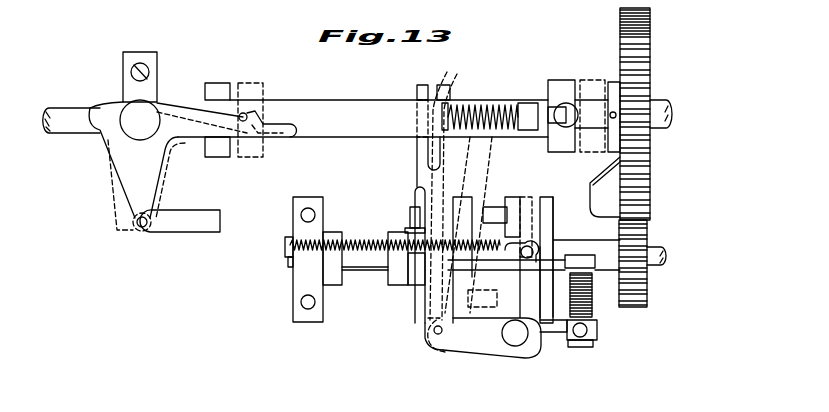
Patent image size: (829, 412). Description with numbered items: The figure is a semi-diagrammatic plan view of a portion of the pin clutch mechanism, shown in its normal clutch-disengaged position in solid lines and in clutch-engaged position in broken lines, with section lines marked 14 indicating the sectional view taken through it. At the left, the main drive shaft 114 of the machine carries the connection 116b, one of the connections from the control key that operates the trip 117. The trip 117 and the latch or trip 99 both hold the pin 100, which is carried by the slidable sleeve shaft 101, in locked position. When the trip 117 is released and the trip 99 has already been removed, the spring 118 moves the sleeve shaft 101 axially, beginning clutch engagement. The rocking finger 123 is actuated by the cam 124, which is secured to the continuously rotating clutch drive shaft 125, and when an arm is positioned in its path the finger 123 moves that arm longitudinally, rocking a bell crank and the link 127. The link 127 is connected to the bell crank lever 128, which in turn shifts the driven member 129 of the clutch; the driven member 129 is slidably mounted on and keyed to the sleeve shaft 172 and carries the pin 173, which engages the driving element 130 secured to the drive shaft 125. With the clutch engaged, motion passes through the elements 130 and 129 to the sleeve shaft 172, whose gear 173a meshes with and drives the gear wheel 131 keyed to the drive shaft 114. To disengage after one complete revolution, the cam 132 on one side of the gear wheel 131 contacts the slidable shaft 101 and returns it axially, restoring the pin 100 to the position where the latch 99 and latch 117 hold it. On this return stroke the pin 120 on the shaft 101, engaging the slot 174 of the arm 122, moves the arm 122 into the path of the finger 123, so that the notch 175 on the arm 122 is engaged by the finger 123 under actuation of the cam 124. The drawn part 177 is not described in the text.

The section line 14- 14 is at (358, 60).
The drive shaft 114 is at (63, 113).
The pin 100 is at (247, 113).
The trip 117 is at (289, 120).
The slidable sleeve shaft 101 is at (350, 125).
The trip 99 is at (281, 148).
The connection 116b is at (207, 208).
The pin 120 is at (446, 82).
The spring 118 is at (485, 108).
The gear wheel 131 is at (620, 33).
The slot 174 is at (433, 152).
The arm 122 is at (426, 172).
The notch 175 is at (415, 188).
The rocking finger 123 is at (407, 212).
The cam 124 is at (413, 276).
The driving element 130 is at (430, 311).
The pin 173 is at (480, 200).
The driven member 129 is at (512, 195).
The cam 132 is at (596, 186).
The link 127 is at (530, 241).
The sleeve shaft 172 is at (608, 257).
The clutch drive shaft 125 is at (658, 268).
The gear 173a is at (633, 298).
The pin 177 is at (488, 303).
The bell crank lever 128 is at (492, 348).